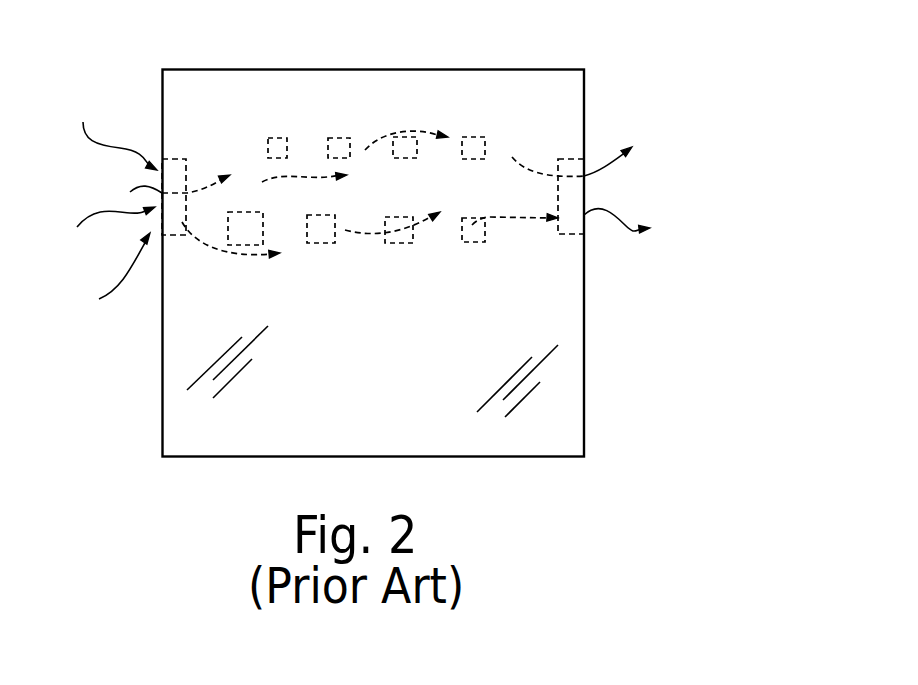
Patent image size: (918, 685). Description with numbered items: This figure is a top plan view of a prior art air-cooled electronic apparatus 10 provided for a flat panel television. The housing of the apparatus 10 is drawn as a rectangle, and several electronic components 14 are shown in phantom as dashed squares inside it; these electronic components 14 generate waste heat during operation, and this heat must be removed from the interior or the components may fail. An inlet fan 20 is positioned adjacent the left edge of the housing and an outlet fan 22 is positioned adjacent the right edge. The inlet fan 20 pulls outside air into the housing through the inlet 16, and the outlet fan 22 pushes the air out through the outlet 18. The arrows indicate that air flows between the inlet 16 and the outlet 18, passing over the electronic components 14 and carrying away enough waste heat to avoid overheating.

The air-cooled electronic apparatus 10 is at (665, 76).
The electronic components 14 is at (292, 124).
The inlet 16 is at (115, 223).
The outlet 18 is at (600, 189).
The inlet fan 20 is at (190, 144).
The outlet fan 22 is at (570, 256).